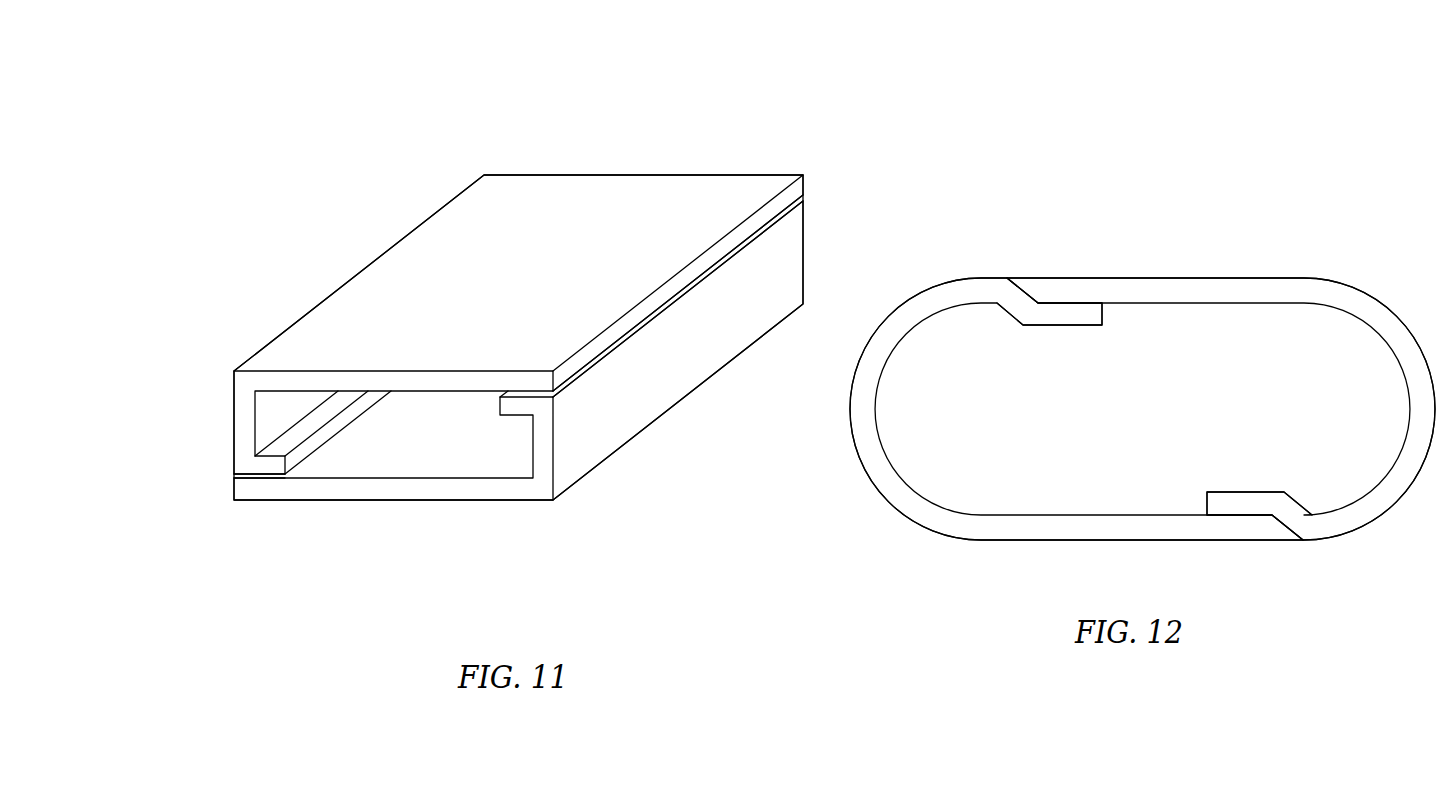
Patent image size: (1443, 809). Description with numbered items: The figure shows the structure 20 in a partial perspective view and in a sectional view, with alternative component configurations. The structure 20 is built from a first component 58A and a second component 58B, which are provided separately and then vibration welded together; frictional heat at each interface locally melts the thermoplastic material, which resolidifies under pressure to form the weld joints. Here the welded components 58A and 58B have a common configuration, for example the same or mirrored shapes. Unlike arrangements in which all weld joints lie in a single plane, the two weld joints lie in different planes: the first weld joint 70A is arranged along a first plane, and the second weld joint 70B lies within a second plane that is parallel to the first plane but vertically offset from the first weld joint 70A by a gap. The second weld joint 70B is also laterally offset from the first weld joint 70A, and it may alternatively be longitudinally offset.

In FIG. 11, the structure 20 is at (710, 92).
In FIG. 12, the structure 20 is at (1265, 203).
In FIG. 11, the first component 58A is at (315, 288).
In FIG. 12, the first component 58A is at (897, 523).
In FIG. 11, the second component 58B is at (513, 508).
In FIG. 12, the second component 58B is at (1367, 273).
In FIG. 11, the first weld joint 70A is at (805, 198).
In FIG. 12, the first weld joint 70A is at (1113, 319).
In FIG. 11, the second weld joint 70B is at (233, 475).
In FIG. 12, the second weld joint 70B is at (1197, 499).